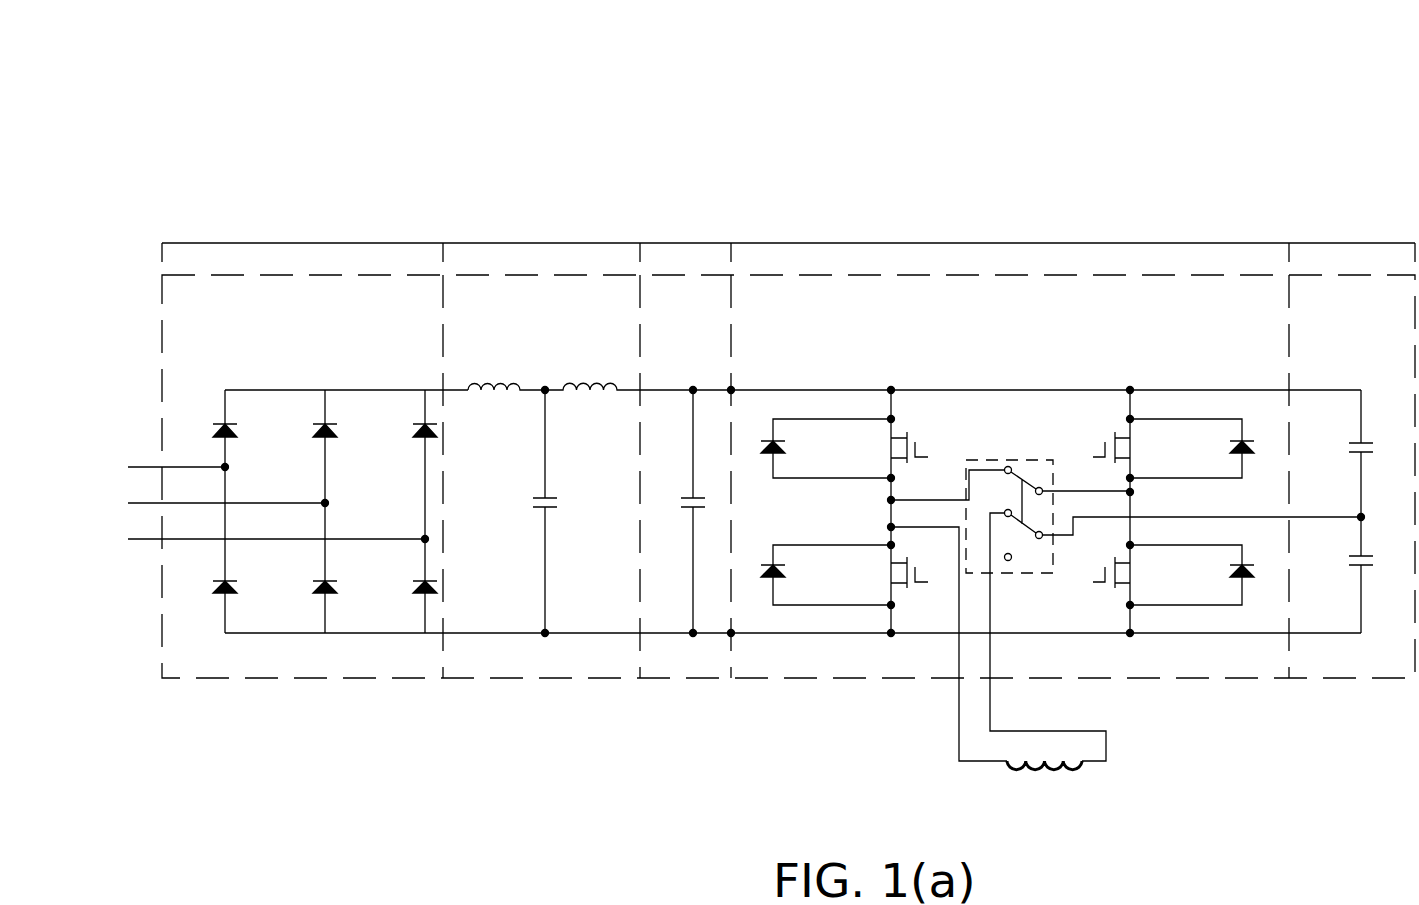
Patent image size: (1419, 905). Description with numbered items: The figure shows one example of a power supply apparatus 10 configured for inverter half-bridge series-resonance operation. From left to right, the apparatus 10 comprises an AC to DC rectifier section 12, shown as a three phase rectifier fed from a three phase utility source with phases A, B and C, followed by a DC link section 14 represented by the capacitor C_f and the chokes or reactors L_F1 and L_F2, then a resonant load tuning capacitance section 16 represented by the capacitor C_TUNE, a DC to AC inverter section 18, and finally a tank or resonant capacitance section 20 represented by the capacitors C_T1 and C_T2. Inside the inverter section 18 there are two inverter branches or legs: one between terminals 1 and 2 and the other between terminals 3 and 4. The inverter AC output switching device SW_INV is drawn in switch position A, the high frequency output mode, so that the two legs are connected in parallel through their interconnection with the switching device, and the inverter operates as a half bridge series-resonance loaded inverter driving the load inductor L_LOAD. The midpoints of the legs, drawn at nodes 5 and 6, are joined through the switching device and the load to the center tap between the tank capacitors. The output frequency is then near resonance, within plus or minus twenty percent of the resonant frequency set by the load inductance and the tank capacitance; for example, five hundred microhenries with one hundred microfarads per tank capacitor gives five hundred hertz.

The apparatus 10 is at (993, 92).
The AC to DC rectifier section 12 is at (303, 243).
The DC (link) section 14 is at (543, 243).
The resonant load tuning capacitance section 16 is at (686, 243).
The DC to AC inverter section 18 is at (1045, 506).
The tank (resonant) capacitance section 20 is at (1352, 243).
The terminal 1 is at (888, 374).
The terminal 2 is at (890, 650).
The terminal 3 is at (1136, 373).
The terminal 4 is at (1136, 650).
The inverter node 5 is at (881, 499).
The inverter node 6 is at (1140, 494).